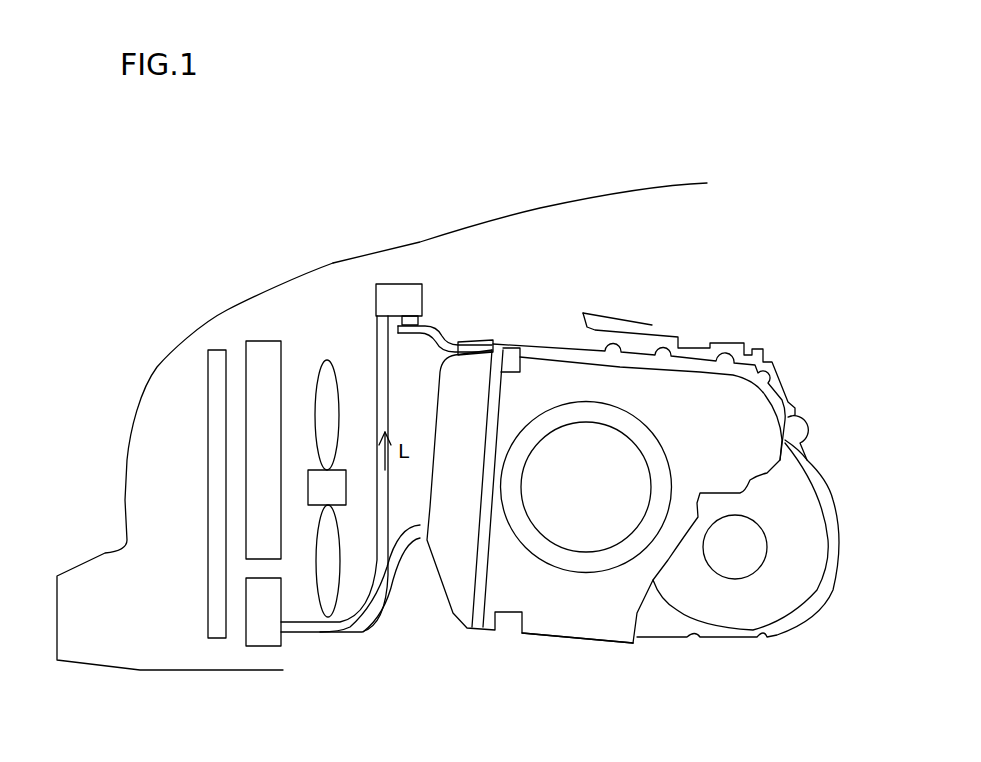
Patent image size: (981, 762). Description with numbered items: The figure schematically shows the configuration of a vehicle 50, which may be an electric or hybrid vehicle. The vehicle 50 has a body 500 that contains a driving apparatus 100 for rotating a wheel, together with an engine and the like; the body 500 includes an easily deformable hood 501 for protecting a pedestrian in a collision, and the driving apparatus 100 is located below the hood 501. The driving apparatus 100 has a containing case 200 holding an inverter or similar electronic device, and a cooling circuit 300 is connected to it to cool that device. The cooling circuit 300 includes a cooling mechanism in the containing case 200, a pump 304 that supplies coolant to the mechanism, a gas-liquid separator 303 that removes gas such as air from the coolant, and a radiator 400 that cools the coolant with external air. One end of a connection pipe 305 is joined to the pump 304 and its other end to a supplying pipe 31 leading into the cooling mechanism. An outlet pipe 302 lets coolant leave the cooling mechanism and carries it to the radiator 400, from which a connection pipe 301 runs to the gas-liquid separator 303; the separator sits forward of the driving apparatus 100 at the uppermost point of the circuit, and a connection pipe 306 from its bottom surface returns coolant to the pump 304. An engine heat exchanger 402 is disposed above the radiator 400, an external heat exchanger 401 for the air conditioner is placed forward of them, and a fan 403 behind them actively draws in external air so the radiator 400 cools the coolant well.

The vehicle 50 is at (370, 147).
The driving apparatus 100 is at (623, 303).
The containing case 200 is at (590, 642).
The cooling circuit 300 is at (445, 280).
The connection pipe 301 is at (380, 378).
The outlet pipe 302 is at (398, 583).
The gas-liquid separator 303 is at (402, 283).
The pump 304 is at (430, 322).
The connection pipe 305 is at (453, 340).
The connection pipe 306 is at (380, 313).
The supplying pipe 31 is at (481, 357).
The radiator 400 is at (267, 635).
The external heat exchanger 401 is at (215, 445).
The engine heat exchanger 402 is at (263, 360).
The fan 403 is at (328, 387).
The body 500 is at (213, 315).
The hood 501 is at (567, 195).